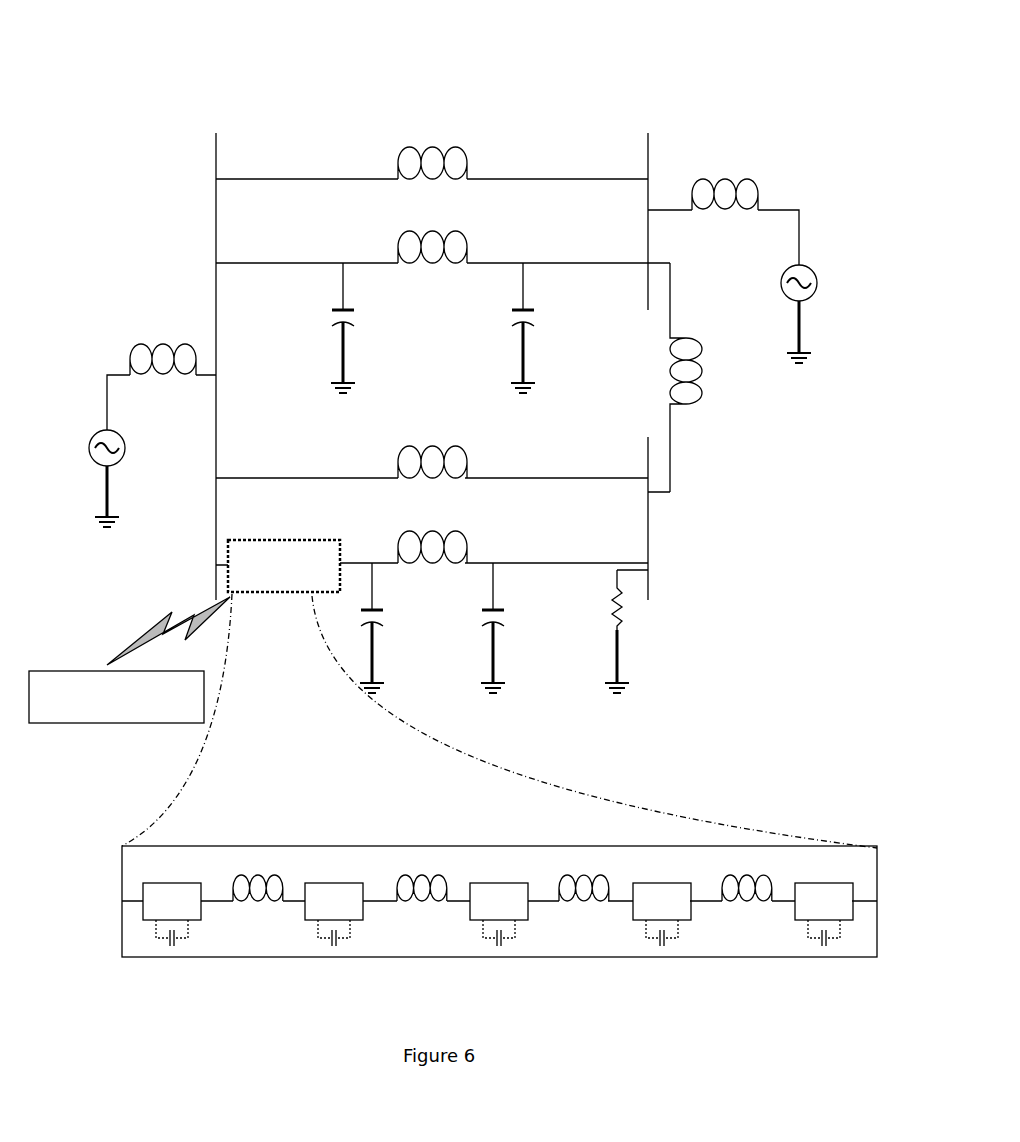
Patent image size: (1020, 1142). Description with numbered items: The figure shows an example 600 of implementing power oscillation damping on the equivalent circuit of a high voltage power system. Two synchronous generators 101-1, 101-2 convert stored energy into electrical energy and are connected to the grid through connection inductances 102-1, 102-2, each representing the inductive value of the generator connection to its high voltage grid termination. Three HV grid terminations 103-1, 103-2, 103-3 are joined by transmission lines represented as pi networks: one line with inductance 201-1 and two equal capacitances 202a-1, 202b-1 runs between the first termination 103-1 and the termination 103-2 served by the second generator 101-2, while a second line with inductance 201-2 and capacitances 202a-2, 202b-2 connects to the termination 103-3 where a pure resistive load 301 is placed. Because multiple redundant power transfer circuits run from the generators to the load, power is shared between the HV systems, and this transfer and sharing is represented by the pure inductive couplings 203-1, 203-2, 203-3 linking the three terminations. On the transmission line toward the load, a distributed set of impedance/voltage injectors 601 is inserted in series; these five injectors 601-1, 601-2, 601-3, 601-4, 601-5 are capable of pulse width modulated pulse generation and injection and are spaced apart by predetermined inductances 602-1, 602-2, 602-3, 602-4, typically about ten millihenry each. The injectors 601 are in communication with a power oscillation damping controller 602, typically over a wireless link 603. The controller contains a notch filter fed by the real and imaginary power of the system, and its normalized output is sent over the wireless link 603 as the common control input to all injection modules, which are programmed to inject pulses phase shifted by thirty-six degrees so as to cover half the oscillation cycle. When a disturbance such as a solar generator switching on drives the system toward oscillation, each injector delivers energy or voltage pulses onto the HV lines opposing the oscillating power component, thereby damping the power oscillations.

The example implementation for power oscillation damping 600 is at (508, 78).
The generator 101-1 is at (89, 450).
The generator 101-2 is at (818, 284).
The generator connection inductance 102-1 is at (128, 343).
The generator connection inductance 102-2 is at (743, 182).
The HV grid termination 103-1 is at (216, 293).
The HV grid termination 103-2 is at (648, 162).
The HV grid termination 103-3 is at (650, 540).
The transmission line inductance 201-1 is at (453, 240).
The transmission line inductance 201-2 is at (450, 542).
The transmission line capacitance 202a-1 is at (353, 325).
The transmission line capacitance 202b-1 is at (522, 325).
The transmission line capacitance 202a-2 is at (380, 612).
The transmission line capacitance 202b-2 is at (490, 624).
The inductive coupling 203-1 is at (455, 158).
The inductive coupling 203-2 is at (460, 462).
The inductive coupling 203-3 is at (703, 404).
The load 301 is at (622, 632).
The impedance/voltage injectors 601 is at (233, 540).
The power oscillation damping controller 602 is at (133, 723).
The wireless link 603 is at (168, 618).
The impedance/voltage injector 601-1 is at (150, 921).
The impedance/voltage injector 601-2 is at (315, 921).
The impedance/voltage injector 601-3 is at (478, 921).
The impedance/voltage injector 601-4 is at (640, 921).
The impedance/voltage injector 601-5 is at (800, 921).
The predetermined inductance LS 602-1 is at (260, 892).
The predetermined inductance LS 602-2 is at (423, 892).
The predetermined inductance LS 602-3 is at (585, 892).
The predetermined inductance LS 602-4 is at (752, 892).